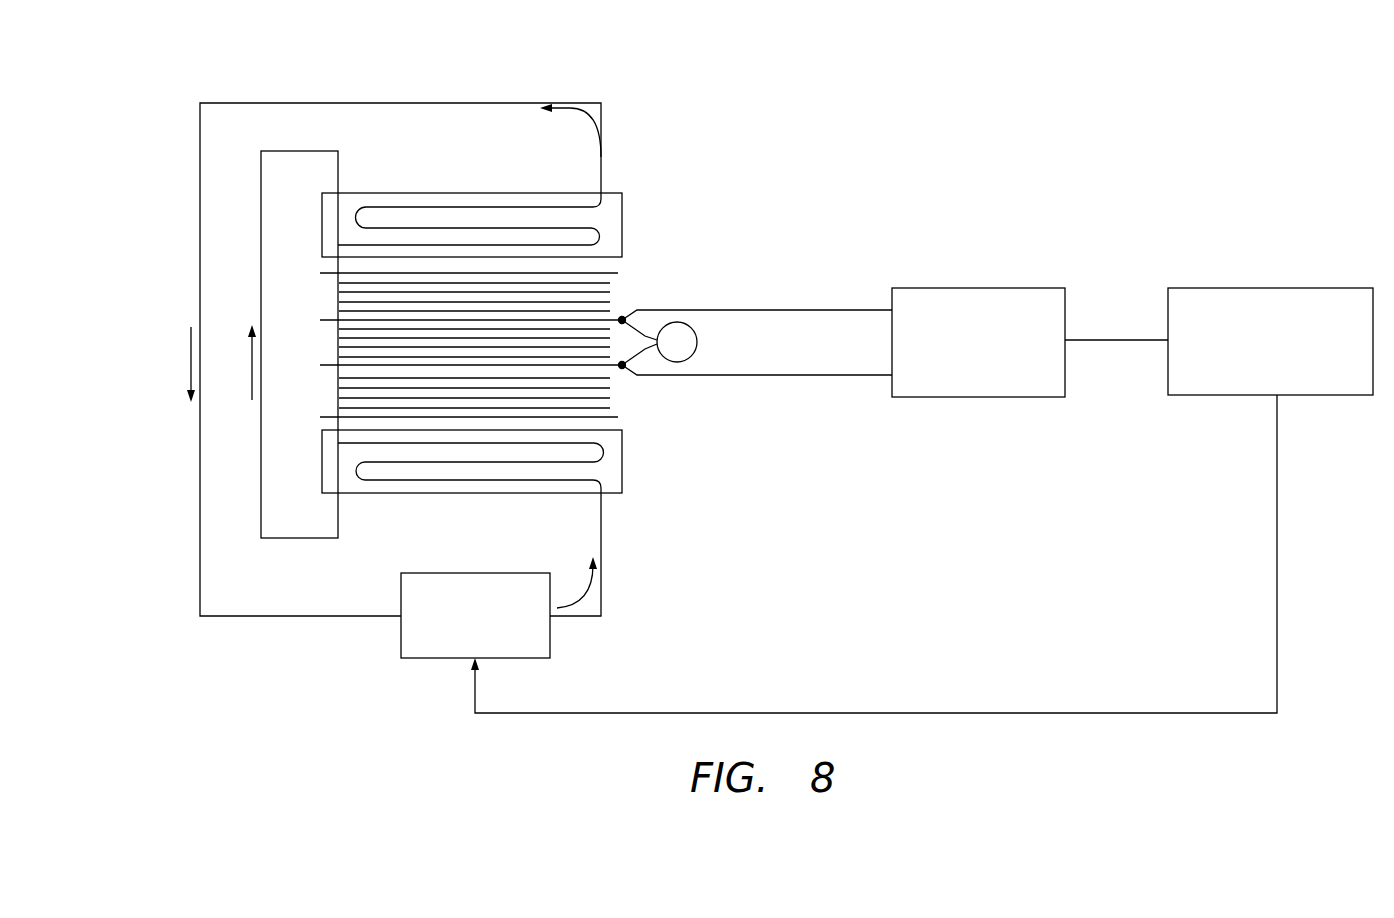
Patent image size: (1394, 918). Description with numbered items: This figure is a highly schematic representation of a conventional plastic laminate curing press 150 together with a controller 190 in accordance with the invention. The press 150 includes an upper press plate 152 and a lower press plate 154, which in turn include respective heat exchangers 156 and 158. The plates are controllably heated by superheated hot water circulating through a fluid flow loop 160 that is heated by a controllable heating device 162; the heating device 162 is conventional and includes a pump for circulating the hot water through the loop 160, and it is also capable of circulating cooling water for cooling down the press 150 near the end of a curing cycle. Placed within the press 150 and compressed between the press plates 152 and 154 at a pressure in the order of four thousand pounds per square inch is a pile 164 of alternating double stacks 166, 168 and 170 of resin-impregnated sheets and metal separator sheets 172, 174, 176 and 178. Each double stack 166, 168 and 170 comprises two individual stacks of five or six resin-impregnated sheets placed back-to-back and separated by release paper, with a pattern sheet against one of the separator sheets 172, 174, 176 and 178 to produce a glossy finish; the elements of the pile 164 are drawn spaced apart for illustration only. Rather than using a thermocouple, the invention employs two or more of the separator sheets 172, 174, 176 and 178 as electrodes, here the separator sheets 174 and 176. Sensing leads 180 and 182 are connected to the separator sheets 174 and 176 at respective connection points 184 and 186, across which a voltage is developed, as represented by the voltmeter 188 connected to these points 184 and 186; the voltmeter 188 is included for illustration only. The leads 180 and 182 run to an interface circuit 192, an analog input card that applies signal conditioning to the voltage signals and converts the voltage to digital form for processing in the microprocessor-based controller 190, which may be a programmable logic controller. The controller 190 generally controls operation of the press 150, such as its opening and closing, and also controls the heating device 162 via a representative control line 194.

The plastic laminate curing press 150 is at (660, 120).
The upper press plate 152 is at (623, 200).
The lower press plate 154 is at (617, 493).
The heat exchanger 156 is at (467, 207).
The heat exchanger 158 is at (417, 480).
The fluid flow loop 160 is at (261, 265).
The heating device 162 is at (427, 658).
The pile 164 is at (559, 323).
The double stack 166 is at (330, 300).
The double stack 168 is at (330, 352).
The double stack 170 is at (330, 404).
The metal separator sheet 172 is at (617, 268).
The metal separator sheet 174 is at (617, 292).
The metal separator sheet 176 is at (620, 374).
The metal separator sheet 178 is at (617, 416).
The sensing lead 180 is at (750, 309).
The sensing lead 182 is at (731, 376).
The connection point 184 is at (623, 318).
The connection point 186 is at (625, 368).
The voltmeter 188 is at (697, 342).
The controller 190 is at (1247, 288).
The interface circuit 192 is at (977, 288).
The control line 194 is at (833, 712).